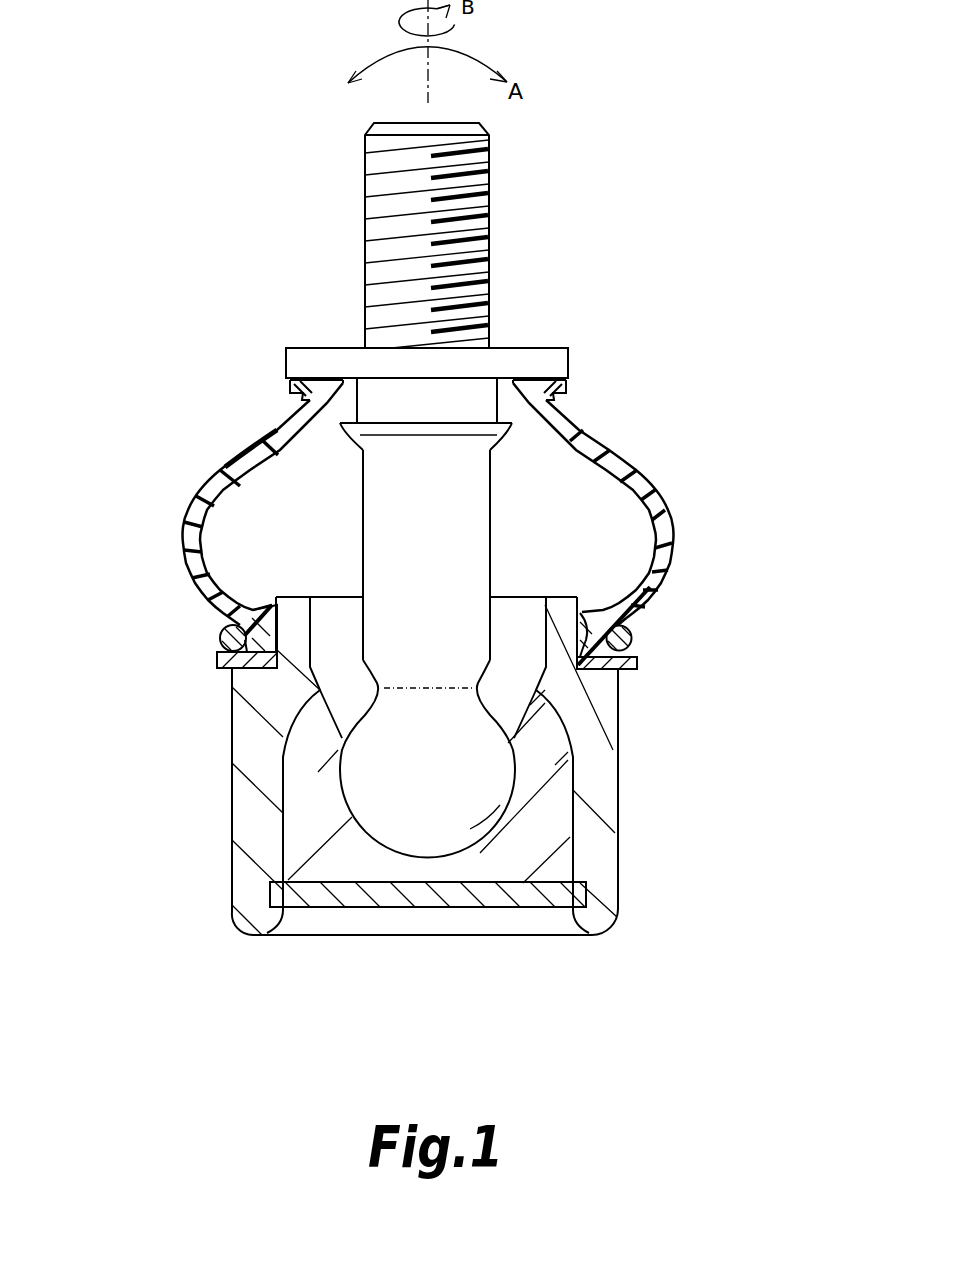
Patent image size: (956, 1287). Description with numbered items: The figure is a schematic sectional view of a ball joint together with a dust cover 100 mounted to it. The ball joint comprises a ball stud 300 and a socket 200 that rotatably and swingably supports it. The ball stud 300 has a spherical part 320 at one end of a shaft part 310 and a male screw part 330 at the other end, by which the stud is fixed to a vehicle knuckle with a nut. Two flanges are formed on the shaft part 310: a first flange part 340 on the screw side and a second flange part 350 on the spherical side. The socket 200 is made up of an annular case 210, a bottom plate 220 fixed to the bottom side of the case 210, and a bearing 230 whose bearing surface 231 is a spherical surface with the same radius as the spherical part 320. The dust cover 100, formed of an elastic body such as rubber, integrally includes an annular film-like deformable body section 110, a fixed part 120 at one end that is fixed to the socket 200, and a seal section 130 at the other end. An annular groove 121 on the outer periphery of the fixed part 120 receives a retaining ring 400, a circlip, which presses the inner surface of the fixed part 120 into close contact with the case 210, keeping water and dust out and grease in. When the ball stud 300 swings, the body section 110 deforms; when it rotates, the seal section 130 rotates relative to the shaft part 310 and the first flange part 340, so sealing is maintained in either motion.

The dust cover 100 is at (451, 527).
The body section 110 is at (623, 466).
The fixed part 120 is at (382, 677).
The annular groove 121 is at (220, 640).
The seal section 130 is at (597, 395).
The socket 200 is at (410, 810).
The case 210 is at (600, 832).
The bottom plate 220 is at (458, 890).
The bearing 230 is at (343, 862).
The bearing surface 231 is at (475, 812).
The ball stud 300 is at (466, 499).
The shaft part 310 is at (383, 512).
The spherical part 320 is at (358, 787).
The male screw part 330 is at (373, 187).
The first flange part 340 is at (537, 353).
The second flange part 350 is at (460, 431).
The retaining ring 400 is at (632, 633).